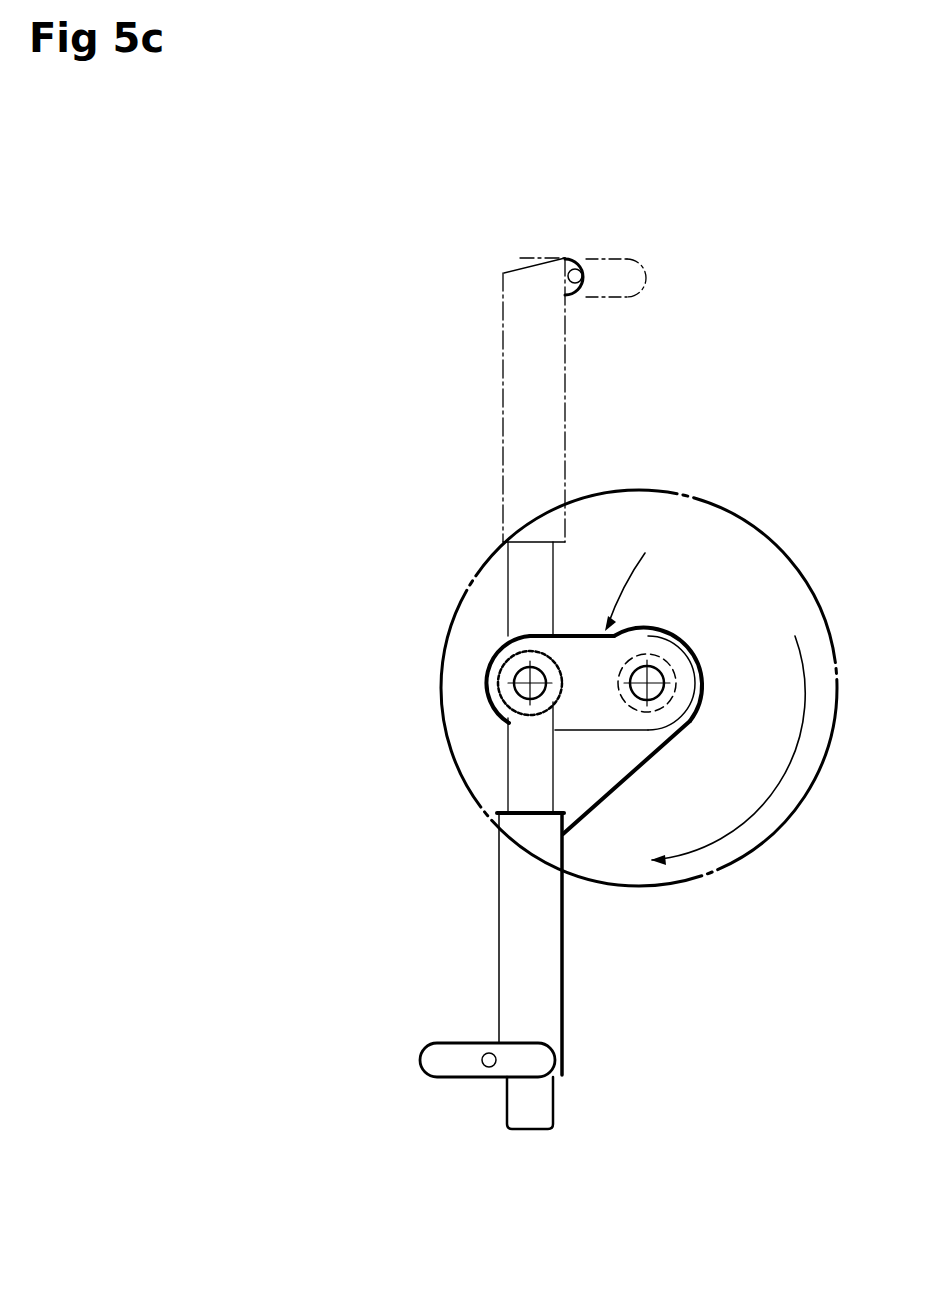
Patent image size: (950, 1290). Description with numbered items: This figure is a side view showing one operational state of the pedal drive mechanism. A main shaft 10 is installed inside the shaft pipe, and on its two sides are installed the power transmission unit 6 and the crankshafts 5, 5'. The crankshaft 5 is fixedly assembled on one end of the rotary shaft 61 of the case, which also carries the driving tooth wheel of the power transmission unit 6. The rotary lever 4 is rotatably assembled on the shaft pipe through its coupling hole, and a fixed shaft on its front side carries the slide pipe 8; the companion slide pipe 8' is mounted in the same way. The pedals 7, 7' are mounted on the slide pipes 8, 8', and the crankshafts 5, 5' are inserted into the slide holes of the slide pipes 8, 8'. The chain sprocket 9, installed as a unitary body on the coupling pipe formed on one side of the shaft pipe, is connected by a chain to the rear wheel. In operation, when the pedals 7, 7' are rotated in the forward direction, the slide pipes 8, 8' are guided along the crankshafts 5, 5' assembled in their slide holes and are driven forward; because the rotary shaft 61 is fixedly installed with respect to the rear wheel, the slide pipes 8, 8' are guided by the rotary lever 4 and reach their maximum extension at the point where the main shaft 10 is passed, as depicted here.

The rotary lever 4 is at (612, 780).
The crankshaft 5 is at (479, 772).
The crankshaft 5' is at (480, 587).
The power transmission unit 6 is at (688, 567).
The rotary shaft 61 is at (497, 683).
The pedal 7 is at (487, 1103).
The pedal 7' is at (644, 275).
The slide pipe 8 is at (573, 944).
The slide pipe 8' is at (496, 400).
The chain sprocket 9 is at (795, 597).
The main shaft 10 is at (692, 715).